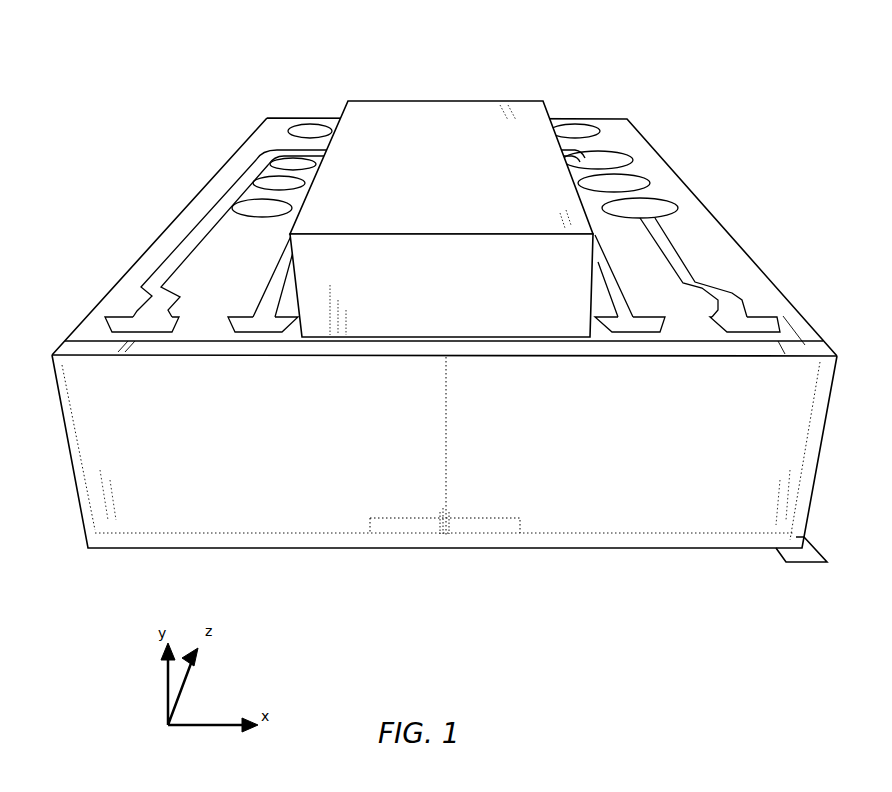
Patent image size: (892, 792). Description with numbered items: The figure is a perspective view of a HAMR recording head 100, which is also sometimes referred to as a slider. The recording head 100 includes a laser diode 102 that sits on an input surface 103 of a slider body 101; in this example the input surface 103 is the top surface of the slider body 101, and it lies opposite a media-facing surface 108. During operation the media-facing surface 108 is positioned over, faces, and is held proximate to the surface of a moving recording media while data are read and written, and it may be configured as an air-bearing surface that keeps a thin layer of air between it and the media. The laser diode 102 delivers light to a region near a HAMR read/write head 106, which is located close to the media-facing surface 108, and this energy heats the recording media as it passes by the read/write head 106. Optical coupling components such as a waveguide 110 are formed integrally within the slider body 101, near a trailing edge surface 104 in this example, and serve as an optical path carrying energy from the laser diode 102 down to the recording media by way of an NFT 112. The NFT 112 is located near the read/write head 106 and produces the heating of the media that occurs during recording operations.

The HAMR recording head 100 is at (433, 343).
The slider body 101 is at (243, 147).
The laser diode 102 is at (363, 100).
The input surface 103 is at (120, 300).
The trailing edge surface 104 is at (150, 522).
The read/write head 106 is at (446, 535).
The media-facing surface 108 is at (816, 565).
The waveguide 110 is at (445, 427).
The NFT 112 is at (441, 540).